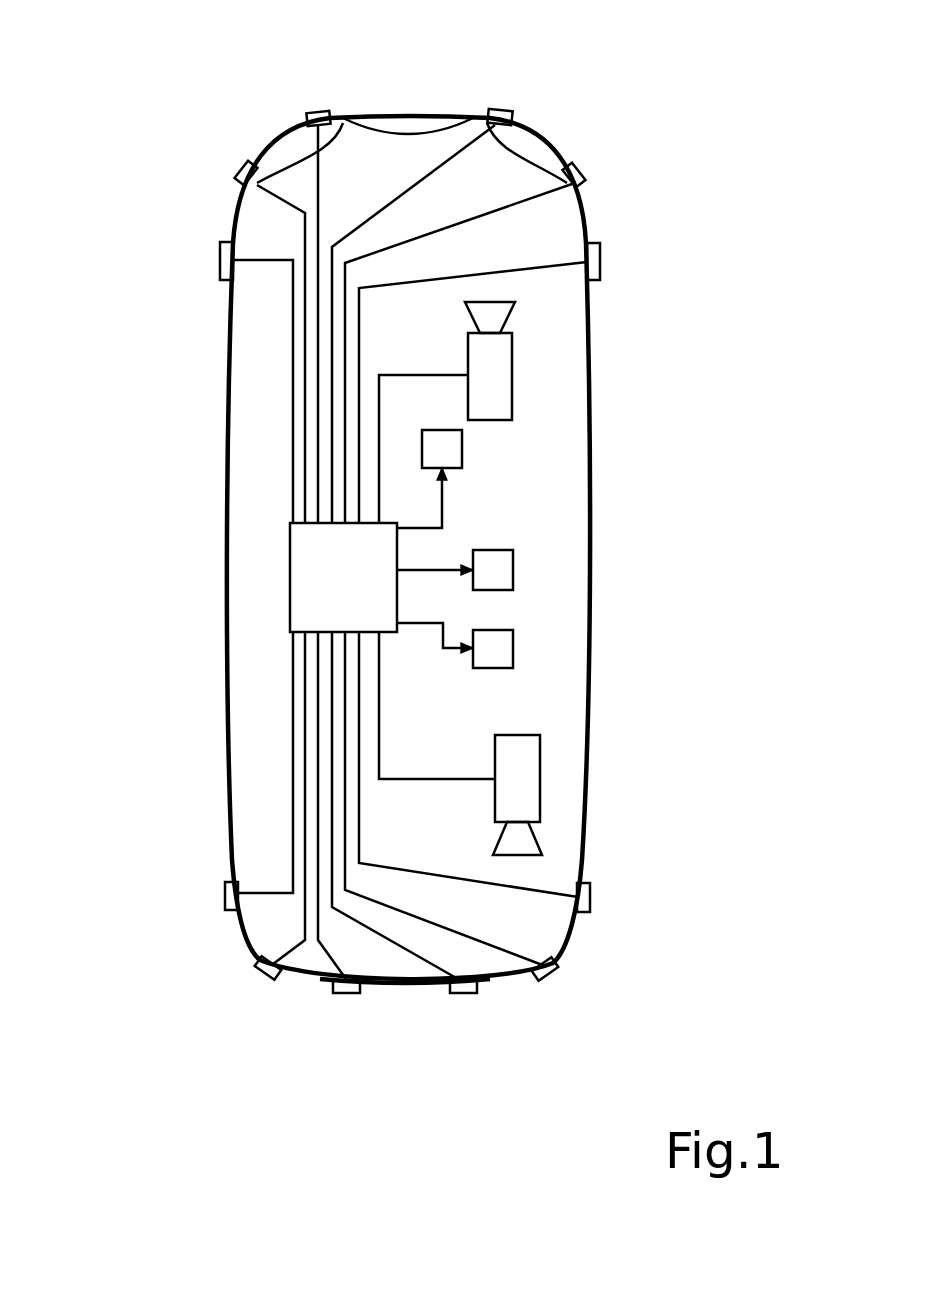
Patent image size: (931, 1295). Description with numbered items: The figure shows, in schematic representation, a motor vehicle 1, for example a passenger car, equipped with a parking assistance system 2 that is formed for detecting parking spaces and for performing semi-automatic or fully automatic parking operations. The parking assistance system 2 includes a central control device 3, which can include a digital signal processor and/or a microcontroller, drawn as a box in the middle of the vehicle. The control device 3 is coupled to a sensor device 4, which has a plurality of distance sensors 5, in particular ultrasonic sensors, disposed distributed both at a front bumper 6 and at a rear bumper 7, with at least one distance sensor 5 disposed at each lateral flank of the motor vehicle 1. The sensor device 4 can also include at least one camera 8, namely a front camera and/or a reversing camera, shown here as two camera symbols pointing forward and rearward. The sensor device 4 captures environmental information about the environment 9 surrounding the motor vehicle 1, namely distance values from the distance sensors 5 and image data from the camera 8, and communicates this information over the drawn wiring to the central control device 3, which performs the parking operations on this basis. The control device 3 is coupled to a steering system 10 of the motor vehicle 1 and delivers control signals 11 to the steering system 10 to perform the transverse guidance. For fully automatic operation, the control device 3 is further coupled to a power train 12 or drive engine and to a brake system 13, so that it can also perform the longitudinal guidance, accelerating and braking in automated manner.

The motor vehicle 1 is at (590, 725).
The parking assistance system 2 is at (268, 602).
The central control device 3 is at (290, 567).
The sensor device 4 is at (183, 143).
The distance sensor 5 is at (243, 165).
The front bumper 6 is at (395, 116).
The rear bumper 7 is at (405, 983).
The camera 8 is at (512, 383).
The environment 9 is at (434, 66).
The steering system 10 is at (462, 452).
The control signals 11 is at (442, 512).
The power train 12 is at (513, 568).
The brake system 13 is at (513, 648).